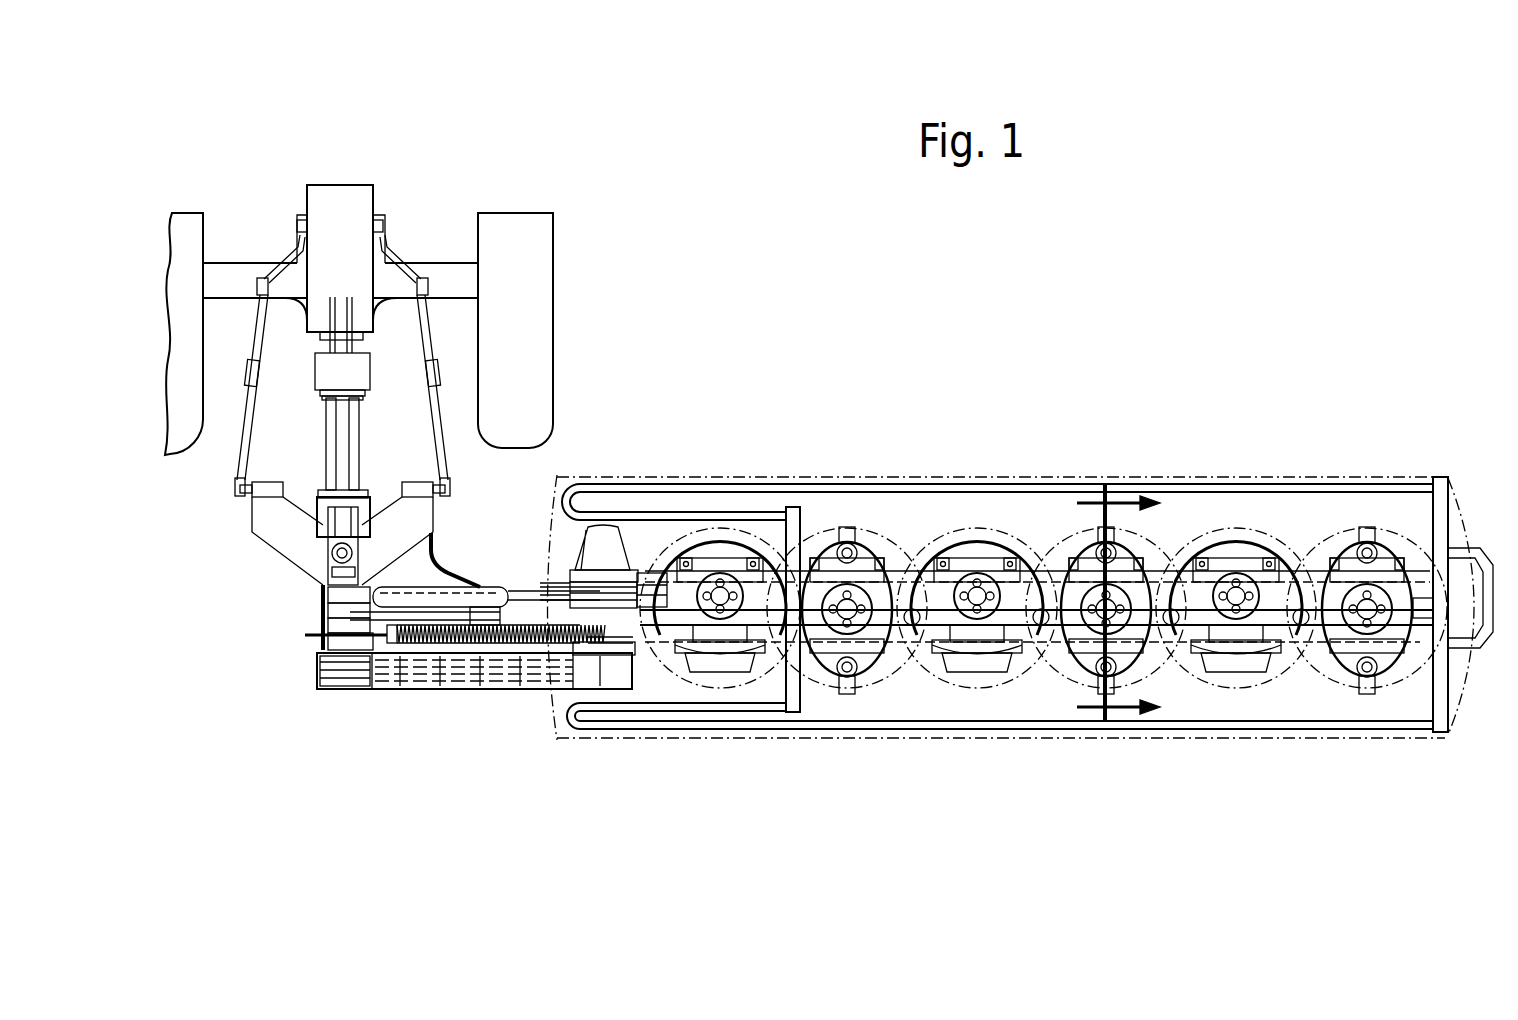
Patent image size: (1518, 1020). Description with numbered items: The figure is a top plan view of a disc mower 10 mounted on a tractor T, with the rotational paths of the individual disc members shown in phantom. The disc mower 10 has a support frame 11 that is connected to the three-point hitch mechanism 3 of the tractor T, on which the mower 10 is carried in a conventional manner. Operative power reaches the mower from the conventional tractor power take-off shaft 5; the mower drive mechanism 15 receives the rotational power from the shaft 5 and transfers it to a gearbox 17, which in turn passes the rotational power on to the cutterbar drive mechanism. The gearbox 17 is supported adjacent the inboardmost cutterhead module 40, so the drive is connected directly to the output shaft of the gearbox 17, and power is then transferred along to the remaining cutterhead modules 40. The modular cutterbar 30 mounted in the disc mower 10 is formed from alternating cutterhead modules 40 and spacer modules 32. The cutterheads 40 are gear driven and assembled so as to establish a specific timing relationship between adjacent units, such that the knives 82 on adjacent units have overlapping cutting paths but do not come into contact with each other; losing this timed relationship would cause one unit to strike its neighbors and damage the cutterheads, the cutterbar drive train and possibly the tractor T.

The tractor T is at (345, 198).
The three-point hitch mechanism 3 is at (294, 411).
The tractor power take-off shaft 5 is at (332, 442).
The support frame 11 is at (410, 527).
The mower drive mechanism 15 is at (383, 727).
The disc mower 10 is at (1016, 536).
The cutterbar 30 is at (1300, 505).
The gearbox 17 is at (632, 540).
The spacer modules 32 is at (1043, 601).
The cutterhead module 40 is at (1226, 562).
The knives 82 is at (936, 640).